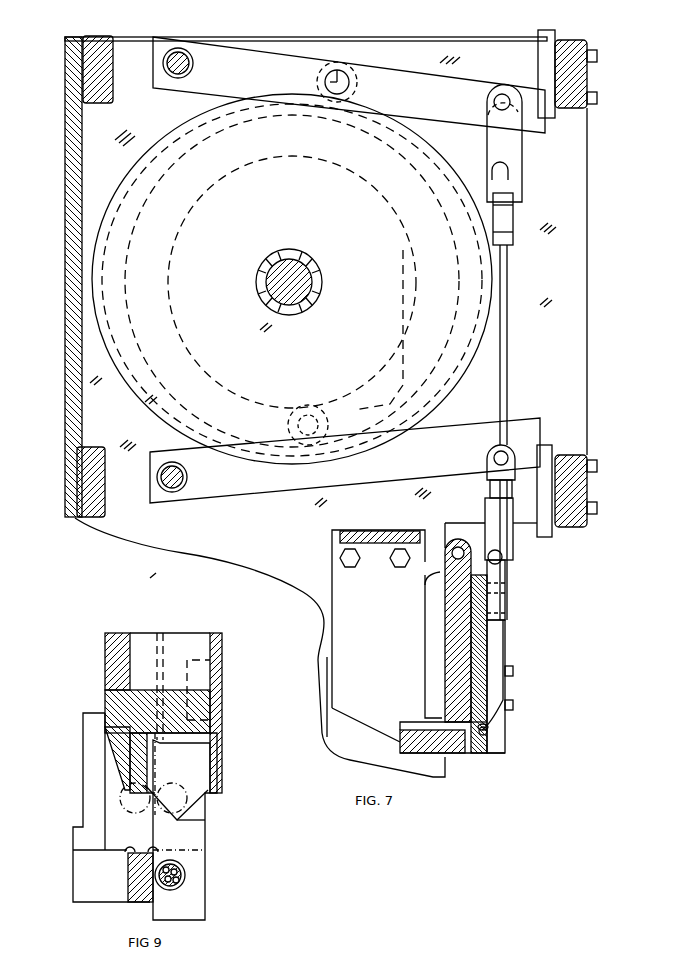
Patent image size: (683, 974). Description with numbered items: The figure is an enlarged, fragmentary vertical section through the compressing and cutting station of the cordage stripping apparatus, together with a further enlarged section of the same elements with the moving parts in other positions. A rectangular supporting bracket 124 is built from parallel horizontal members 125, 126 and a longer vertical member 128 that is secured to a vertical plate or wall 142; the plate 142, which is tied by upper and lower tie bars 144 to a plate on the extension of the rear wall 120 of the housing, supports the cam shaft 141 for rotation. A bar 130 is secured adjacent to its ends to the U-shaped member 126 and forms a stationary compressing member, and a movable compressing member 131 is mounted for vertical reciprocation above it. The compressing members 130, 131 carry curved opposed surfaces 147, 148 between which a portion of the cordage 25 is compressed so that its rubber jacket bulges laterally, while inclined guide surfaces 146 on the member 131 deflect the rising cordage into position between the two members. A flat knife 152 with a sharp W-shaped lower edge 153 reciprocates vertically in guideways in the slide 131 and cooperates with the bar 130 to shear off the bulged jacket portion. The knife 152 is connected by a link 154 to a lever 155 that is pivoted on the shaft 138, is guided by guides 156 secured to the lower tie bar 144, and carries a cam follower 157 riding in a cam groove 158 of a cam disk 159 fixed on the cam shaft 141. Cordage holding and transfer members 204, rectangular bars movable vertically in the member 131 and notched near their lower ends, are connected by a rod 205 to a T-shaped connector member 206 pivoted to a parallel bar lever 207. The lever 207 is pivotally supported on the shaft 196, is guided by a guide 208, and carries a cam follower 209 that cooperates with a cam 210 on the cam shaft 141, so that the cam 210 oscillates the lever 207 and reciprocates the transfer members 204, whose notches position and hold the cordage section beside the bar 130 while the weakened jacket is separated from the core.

In FIG. 7, the rear wall 120 is at (64, 262).
In FIG. 7, the tie bars 144 is at (99, 104).
In FIG. 7, the shaft 196 is at (179, 49).
In FIG. 7, the cam follower 209 is at (340, 70).
In FIG. 7, the guide 208 is at (540, 30).
In FIG. 7, the parallel bar lever 207 is at (466, 87).
In FIG. 7, the cam 210 is at (382, 128).
In FIG. 7, the cam shaft 141 is at (311, 283).
In FIG. 7, the T-shaped connector member 206 is at (513, 222).
In FIG. 7, the rod 205 is at (508, 343).
In FIG. 9, the rod 205 is at (179, 785).
In FIG. 7, the cam groove 158 is at (270, 406).
In FIG. 7, the cam follower 157 is at (330, 403).
In FIG. 7, the cam disk 159 is at (473, 370).
In FIG. 7, the lever 155 is at (512, 416).
In FIG. 7, the guides 156 is at (547, 446).
In FIG. 7, the shaft 138 is at (158, 478).
In FIG. 7, the horizontal member 125 is at (385, 528).
In FIG. 7, the link 154 is at (486, 508).
In FIG. 7, the vertical plate 142 is at (218, 562).
In FIG. 7, the supporting bracket 124 is at (324, 573).
In FIG. 7, the vertical member 128 is at (318, 634).
In FIG. 7, the knife 152 is at (466, 645).
In FIG. 7, the lower edge 153 is at (474, 712).
In FIG. 7, the transfer members 204 is at (506, 641).
In FIG. 9, the transfer members 204 is at (205, 912).
In FIG. 7, the horizontal member 126 is at (400, 740).
In FIG. 7, the cordage 25 is at (490, 735).
In FIG. 9, the cordage 25 is at (136, 812).
In FIG. 7, the bar 130 is at (480, 754).
In FIG. 9, the bar 130 is at (130, 902).
In FIG. 9, the movable compressing member 131 is at (125, 697).
In FIG. 9, the curved surface 147 is at (120, 790).
In FIG. 9, the inclined guide surfaces 146 is at (195, 820).
In FIG. 9, the curved surface 148 is at (125, 853).